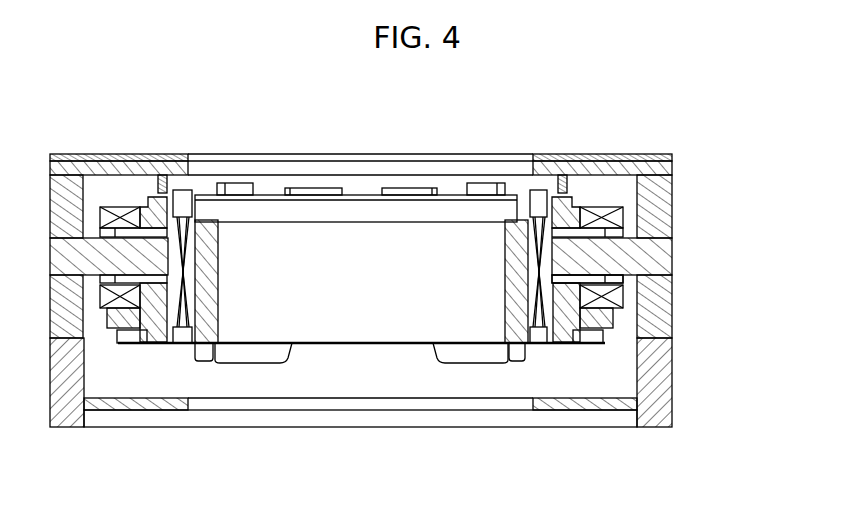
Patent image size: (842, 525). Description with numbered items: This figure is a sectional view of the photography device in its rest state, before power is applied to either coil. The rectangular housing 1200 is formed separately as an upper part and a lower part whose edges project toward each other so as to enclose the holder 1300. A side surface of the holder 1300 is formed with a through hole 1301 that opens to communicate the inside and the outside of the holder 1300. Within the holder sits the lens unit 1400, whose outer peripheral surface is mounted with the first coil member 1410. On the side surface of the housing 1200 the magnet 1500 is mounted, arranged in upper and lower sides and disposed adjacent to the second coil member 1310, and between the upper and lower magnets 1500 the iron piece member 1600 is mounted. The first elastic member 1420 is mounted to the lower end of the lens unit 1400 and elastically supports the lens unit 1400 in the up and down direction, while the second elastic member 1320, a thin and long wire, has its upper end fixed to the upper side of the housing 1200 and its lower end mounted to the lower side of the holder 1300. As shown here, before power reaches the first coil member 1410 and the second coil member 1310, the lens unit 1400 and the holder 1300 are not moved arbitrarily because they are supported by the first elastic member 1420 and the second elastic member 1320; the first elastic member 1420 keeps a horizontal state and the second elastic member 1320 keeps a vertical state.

The housing 1200 is at (652, 390).
The holder 1300 is at (565, 320).
The through hole 1301 is at (577, 287).
The second coil member 1310 is at (603, 207).
The second elastic member 1320 is at (150, 173).
The lens unit 1400 is at (244, 222).
The first coil member 1410 is at (534, 200).
The first elastic member 1420 is at (533, 347).
The magnet 1500 is at (655, 210).
The iron piece member 1600 is at (655, 257).